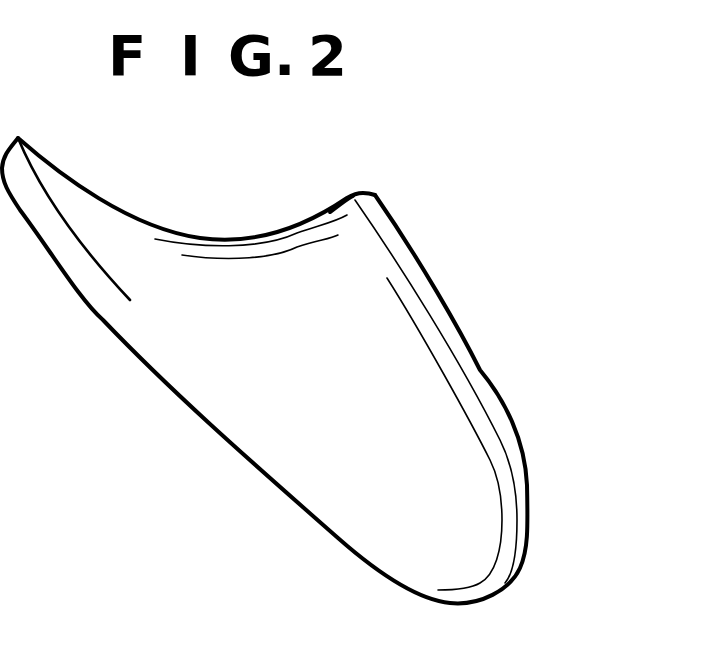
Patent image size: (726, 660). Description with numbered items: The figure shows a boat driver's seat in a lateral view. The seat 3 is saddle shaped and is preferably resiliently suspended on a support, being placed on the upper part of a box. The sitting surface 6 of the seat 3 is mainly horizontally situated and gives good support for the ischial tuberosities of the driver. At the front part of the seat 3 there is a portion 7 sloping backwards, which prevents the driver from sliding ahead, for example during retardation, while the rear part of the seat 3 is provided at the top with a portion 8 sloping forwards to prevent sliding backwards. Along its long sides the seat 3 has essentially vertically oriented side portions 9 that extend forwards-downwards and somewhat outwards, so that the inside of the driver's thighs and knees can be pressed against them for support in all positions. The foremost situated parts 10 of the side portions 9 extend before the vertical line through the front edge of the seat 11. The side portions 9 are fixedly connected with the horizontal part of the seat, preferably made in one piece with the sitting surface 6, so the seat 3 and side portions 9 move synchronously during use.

The seat 3 is at (233, 448).
The sitting surface 6 is at (213, 237).
The portion sloping backwards 7 is at (337, 207).
The portion sloping forwards 8 is at (67, 182).
The side portions 9 is at (390, 520).
The foremost situated parts of the side portions 10 is at (500, 476).
The front edge of the seat 11 is at (373, 195).